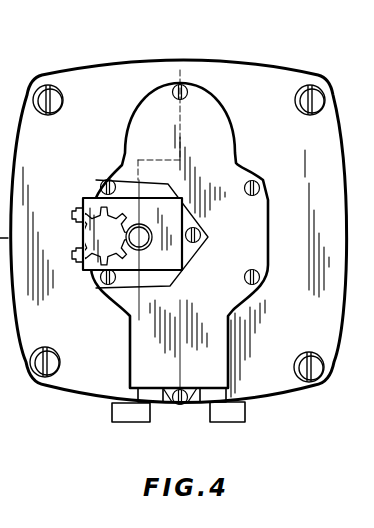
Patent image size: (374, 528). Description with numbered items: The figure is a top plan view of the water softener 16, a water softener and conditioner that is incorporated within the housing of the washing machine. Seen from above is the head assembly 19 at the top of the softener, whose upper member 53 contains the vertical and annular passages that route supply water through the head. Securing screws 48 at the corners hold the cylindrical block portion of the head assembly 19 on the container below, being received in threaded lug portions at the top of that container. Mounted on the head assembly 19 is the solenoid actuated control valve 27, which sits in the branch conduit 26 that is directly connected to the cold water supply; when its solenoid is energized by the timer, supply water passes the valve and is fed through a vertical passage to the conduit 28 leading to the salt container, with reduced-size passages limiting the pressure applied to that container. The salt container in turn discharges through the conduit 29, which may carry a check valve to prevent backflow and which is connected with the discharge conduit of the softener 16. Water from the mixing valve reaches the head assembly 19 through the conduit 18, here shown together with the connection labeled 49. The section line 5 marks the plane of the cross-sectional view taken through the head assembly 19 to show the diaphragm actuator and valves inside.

The water softener 16 is at (81, 65).
The head assembly 19 is at (247, 84).
The securing screws 48 is at (45, 350).
The upper member 53 is at (140, 138).
The solenoid actuated control valve 27 is at (83, 237).
The conduit 29 is at (140, 392).
The conduit 28 is at (216, 397).
The conduit 26 is at (118, 412).
The mounting block 49 is at (260, 414).
The conduit 18 is at (233, 413).
The section line 5- 5 is at (202, 44).